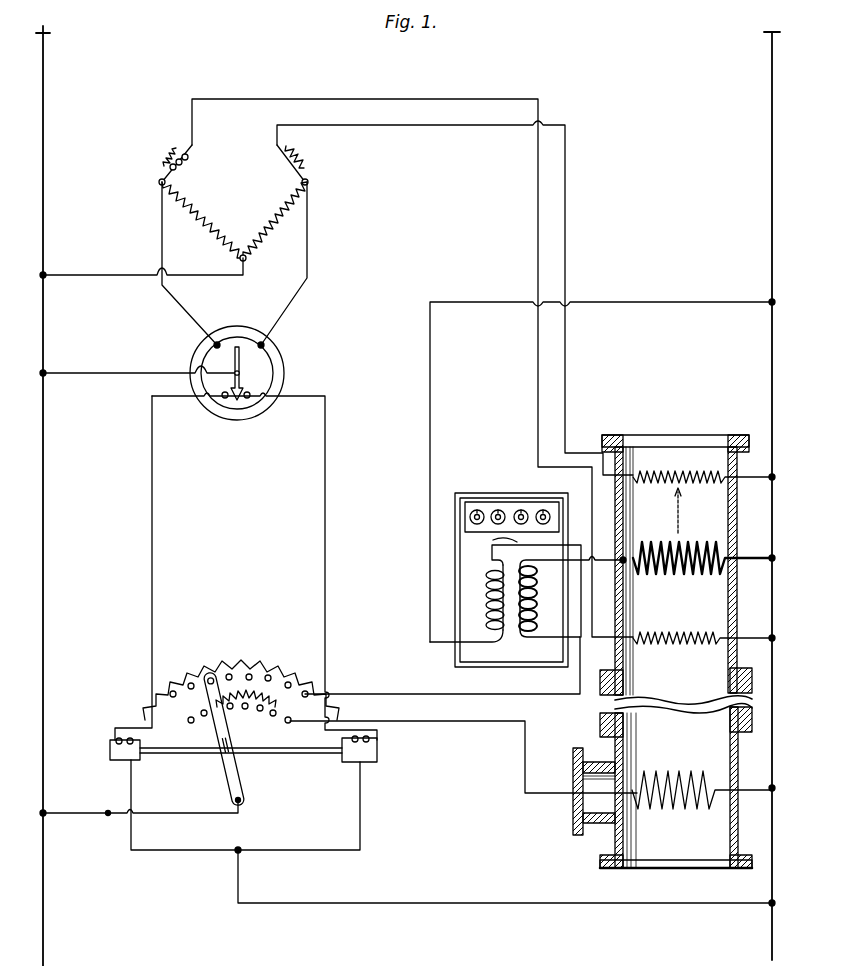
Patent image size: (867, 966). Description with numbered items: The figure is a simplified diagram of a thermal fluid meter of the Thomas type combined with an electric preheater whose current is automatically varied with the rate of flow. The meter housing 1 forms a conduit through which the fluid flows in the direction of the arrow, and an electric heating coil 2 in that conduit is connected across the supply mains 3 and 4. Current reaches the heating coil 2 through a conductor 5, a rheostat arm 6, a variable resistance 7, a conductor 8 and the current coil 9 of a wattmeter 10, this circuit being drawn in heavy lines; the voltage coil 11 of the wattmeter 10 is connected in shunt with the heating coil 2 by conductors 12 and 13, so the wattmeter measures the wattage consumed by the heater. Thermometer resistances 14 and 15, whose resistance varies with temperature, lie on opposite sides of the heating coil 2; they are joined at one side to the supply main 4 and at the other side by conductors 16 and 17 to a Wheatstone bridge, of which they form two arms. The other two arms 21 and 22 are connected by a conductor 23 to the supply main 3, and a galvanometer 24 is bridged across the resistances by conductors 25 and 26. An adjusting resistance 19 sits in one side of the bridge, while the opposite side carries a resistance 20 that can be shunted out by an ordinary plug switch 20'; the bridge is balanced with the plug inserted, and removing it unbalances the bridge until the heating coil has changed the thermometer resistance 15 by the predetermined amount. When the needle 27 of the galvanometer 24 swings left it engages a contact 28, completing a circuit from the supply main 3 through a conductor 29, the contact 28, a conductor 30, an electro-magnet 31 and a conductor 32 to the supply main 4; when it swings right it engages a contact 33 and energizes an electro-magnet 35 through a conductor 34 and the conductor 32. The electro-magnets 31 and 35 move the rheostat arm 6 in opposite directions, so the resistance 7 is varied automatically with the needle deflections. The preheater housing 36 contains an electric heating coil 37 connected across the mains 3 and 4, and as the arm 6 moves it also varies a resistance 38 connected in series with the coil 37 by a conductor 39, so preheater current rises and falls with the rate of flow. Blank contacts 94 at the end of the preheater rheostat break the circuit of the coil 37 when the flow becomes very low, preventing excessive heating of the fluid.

The housing of the meter 1 is at (737, 508).
The electric heating coil 2 is at (700, 544).
The supply main 3 is at (45, 924).
The supply main 4 is at (770, 922).
The conductor 5 is at (198, 813).
The rheostat arm 6 is at (236, 781).
The variable resistance 7 is at (240, 665).
The conductor 8 is at (377, 694).
The current coil of the wattmeter 9 is at (537, 597).
The wattmeter 10 is at (498, 494).
The voltage coil of the wattmeter 11 is at (488, 597).
The conductor 12 is at (525, 587).
The conductor 13 is at (650, 302).
The thermometer resistance 14 is at (700, 632).
The thermometer resistance 15 is at (680, 470).
The conductor 16 is at (538, 256).
The conductor 17 is at (565, 260).
The adjusting resistance 19 is at (303, 161).
The resistance 20 is at (163, 159).
The plug switch 20' is at (145, 178).
The arm of the Wheatstone bridge 21 is at (281, 206).
The arm of the Wheatstone bridge 22 is at (185, 198).
The conductor 23 is at (108, 273).
The galvanometer 24 is at (270, 352).
The conductor 25 is at (163, 250).
The conductor 26 is at (307, 257).
The needle 27 is at (243, 380).
The contact 28 is at (222, 400).
The conductor 29 is at (105, 373).
The conductor 30 is at (153, 604).
The electro-magnet 31 is at (210, 752).
The conductor 32 is at (441, 903).
The contact 33 is at (252, 400).
The conductor 34 is at (325, 497).
The electro-magnet 35 is at (377, 749).
The housing for the preheater 36 is at (615, 840).
The electric heating coil 37 is at (697, 806).
The resistance 38 is at (257, 683).
The conductor 39 is at (497, 722).
The blank contacts 94 is at (187, 720).